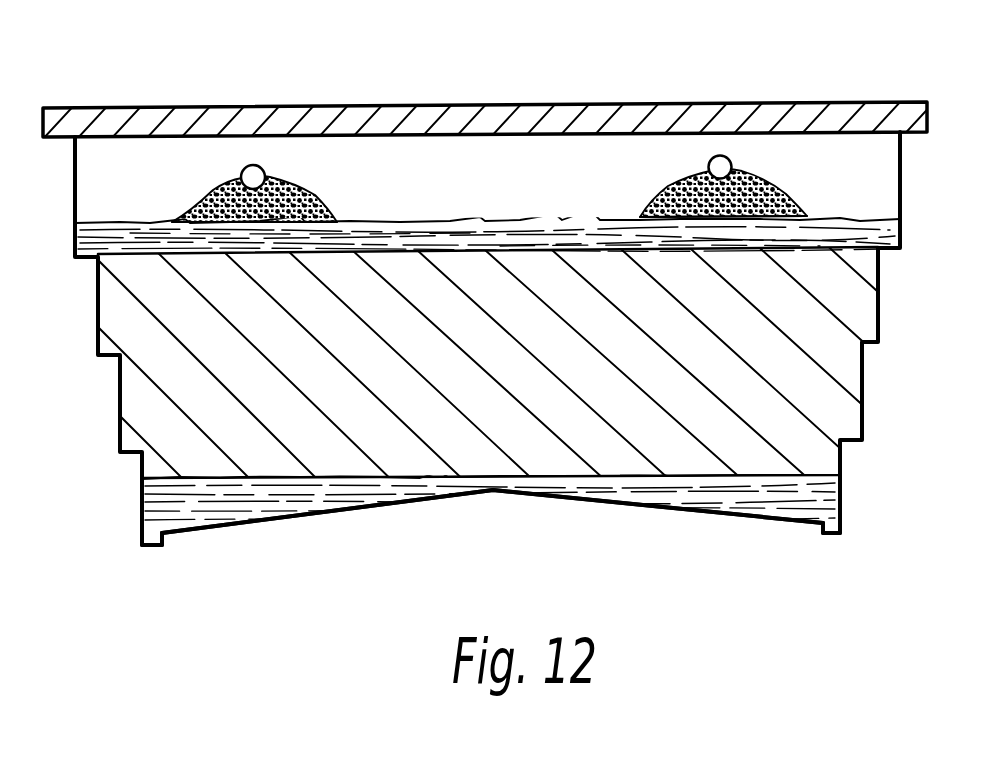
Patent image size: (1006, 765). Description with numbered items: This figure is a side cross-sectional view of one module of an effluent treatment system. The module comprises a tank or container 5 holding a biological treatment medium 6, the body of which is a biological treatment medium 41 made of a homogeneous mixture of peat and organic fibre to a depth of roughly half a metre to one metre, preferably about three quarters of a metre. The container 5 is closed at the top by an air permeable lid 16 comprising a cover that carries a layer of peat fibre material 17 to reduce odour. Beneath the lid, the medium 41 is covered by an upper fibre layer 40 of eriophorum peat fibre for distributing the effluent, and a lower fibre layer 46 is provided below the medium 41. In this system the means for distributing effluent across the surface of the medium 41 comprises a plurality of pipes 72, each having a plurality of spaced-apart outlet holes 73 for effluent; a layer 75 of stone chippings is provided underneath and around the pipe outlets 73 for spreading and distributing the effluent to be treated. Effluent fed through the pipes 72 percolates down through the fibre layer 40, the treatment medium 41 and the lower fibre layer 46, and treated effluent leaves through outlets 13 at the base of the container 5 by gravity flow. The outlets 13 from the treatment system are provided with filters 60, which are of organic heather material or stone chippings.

The container 5 is at (883, 298).
The biological treatment medium 6 is at (848, 409).
The outlets 13 is at (141, 533).
The air permeable lid 16 is at (890, 102).
The layer of peat fibre material 17 is at (780, 118).
The upper fibre layer 40 is at (887, 231).
The biological treatment medium 41 is at (823, 375).
The lower fibre layer 46 is at (835, 490).
The filters 60 is at (150, 547).
The pipes 72 is at (720, 155).
The outlet holes 73 is at (692, 205).
The layer of stone chippings 75 is at (777, 184).